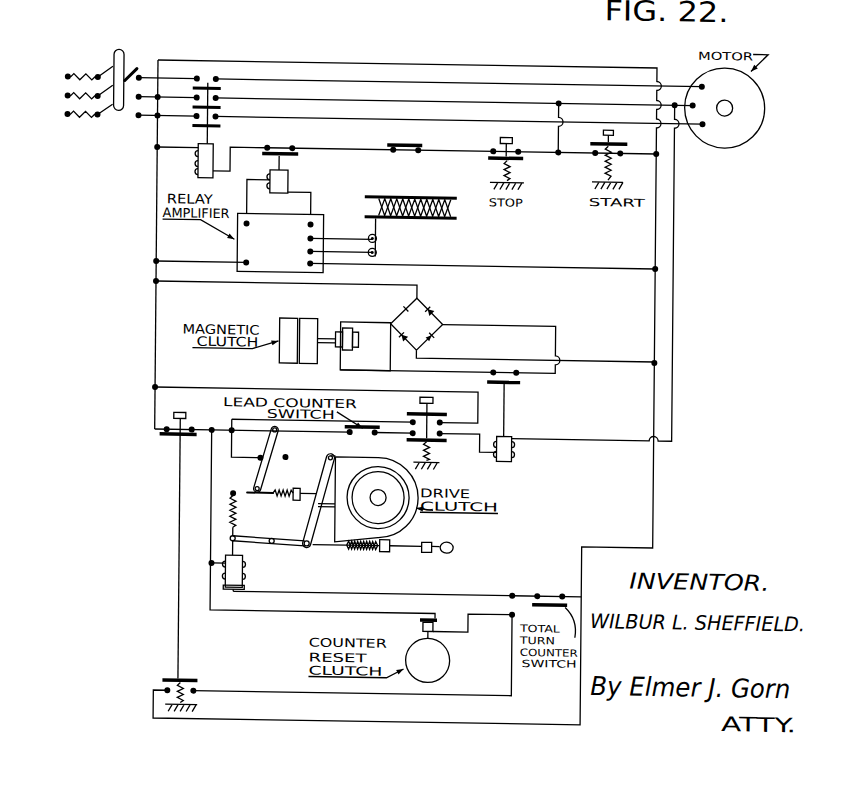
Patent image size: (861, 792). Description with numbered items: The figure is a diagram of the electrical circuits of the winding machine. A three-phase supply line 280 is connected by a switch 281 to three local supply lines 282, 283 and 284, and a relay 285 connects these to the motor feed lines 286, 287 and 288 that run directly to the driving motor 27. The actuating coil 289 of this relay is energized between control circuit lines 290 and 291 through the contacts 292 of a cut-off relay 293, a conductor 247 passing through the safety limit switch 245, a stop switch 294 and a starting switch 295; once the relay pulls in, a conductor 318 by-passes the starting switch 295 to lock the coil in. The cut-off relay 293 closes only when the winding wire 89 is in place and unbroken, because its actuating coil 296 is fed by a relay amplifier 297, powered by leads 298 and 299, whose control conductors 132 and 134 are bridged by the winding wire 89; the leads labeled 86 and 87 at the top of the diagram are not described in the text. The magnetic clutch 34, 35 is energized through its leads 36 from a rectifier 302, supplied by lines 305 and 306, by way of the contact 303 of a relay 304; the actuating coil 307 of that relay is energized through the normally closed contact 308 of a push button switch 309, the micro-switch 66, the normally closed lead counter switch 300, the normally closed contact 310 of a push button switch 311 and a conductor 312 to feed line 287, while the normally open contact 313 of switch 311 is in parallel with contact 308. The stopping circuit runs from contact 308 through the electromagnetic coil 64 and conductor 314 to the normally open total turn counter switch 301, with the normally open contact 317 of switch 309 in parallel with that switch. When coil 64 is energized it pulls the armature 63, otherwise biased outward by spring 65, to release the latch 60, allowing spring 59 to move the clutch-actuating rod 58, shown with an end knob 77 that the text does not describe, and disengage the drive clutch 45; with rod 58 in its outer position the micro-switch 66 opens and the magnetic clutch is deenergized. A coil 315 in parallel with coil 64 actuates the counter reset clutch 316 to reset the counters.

The driving motor 27 is at (733, 123).
The magnetic clutch 34 is at (308, 317).
The magnetic clutch 35 is at (287, 347).
The leads 36 is at (371, 366).
The drive clutch 45 is at (416, 510).
The clutch-actuating rod 58 is at (407, 549).
The spring 59 is at (366, 546).
The latch 60 is at (306, 542).
The armature 63 is at (230, 554).
The electromagnetic coil 64 is at (232, 590).
The spring 65 is at (234, 514).
The micro-switch 66 is at (270, 440).
The knob 77 is at (458, 544).
The conductor 86 is at (452, 10).
The conductor 87 is at (412, 17).
The winding wire 89 is at (381, 221).
The conductor 132 is at (341, 248).
The conductor 134 is at (346, 233).
The safety limit switch 245 is at (406, 140).
The conductors 247 is at (319, 146).
The three-phase supply line 280 is at (66, 114).
The switch 281 is at (122, 49).
The local supply line 282 is at (145, 72).
The local supply line 283 is at (147, 97).
The local supply line 284 is at (146, 119).
The relay 285 is at (203, 161).
The motor feed line 286 is at (255, 77).
The motor feed line 287 is at (277, 96).
The motor feed line 288 is at (308, 116).
The actuating coil 289 is at (158, 189).
The control circuit line 290 is at (155, 255).
The control circuit line 291 is at (658, 208).
The contacts 292 is at (278, 133).
The cut-off relay 293 is at (284, 161).
The stop switch 294 is at (514, 146).
The starting switch 295 is at (611, 134).
The actuating coil 296 is at (291, 179).
The relay amplifier 297 is at (272, 257).
The lead 298 is at (187, 260).
The lead 299 is at (519, 264).
The lead counter switch 300 is at (361, 427).
The total turn counter switch 301 is at (544, 596).
The rectifier 302 is at (428, 316).
The contact 303 is at (525, 379).
The relay 304 is at (510, 408).
The line 305 is at (289, 282).
The line 306 is at (613, 354).
The actuating coil 307 is at (517, 440).
The contact 308 is at (173, 434).
The push button switch 309 is at (181, 480).
The contact 310 is at (447, 439).
The push button switch 311 is at (420, 409).
The conductor 312 is at (603, 434).
The contact 313 is at (436, 408).
The conductor 314 is at (318, 591).
The coil 315 is at (441, 608).
The counter reset clutch 316 is at (457, 664).
The contact 317 is at (175, 677).
The conductor 318 is at (561, 95).